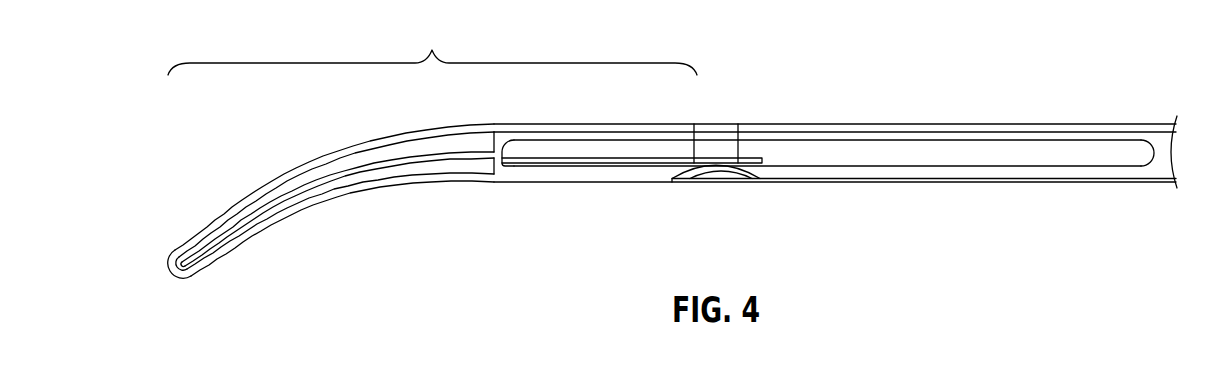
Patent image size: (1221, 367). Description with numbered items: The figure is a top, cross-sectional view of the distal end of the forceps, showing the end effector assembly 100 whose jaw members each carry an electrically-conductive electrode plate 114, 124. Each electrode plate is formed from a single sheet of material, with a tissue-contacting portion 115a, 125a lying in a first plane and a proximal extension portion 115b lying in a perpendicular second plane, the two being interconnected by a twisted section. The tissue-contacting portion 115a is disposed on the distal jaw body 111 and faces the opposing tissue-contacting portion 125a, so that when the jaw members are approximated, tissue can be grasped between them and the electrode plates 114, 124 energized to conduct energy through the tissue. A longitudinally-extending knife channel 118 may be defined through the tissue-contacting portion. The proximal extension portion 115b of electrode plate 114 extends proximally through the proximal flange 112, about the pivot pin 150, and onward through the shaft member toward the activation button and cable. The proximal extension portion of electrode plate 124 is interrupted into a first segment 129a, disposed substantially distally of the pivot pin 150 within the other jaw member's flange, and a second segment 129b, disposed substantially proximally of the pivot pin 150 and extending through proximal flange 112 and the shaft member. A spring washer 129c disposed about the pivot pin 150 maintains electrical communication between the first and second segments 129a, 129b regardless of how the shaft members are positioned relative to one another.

The end effector assembly 100 is at (432, 49).
The distal jaw body 111 is at (300, 172).
The electrode plate 114 is at (500, 125).
The tissue-contacting portion 115a is at (381, 157).
The proximal extension portion 115b is at (625, 132).
The knife channel 118 is at (315, 183).
The pivot pin 150 is at (722, 142).
The electrode plate 124 is at (503, 165).
The tissue-contacting portion 125a is at (520, 166).
The proximal flange 112 is at (590, 183).
The first segment 129a is at (637, 162).
The second segment 129b is at (1035, 178).
The spring washer 129c is at (733, 168).